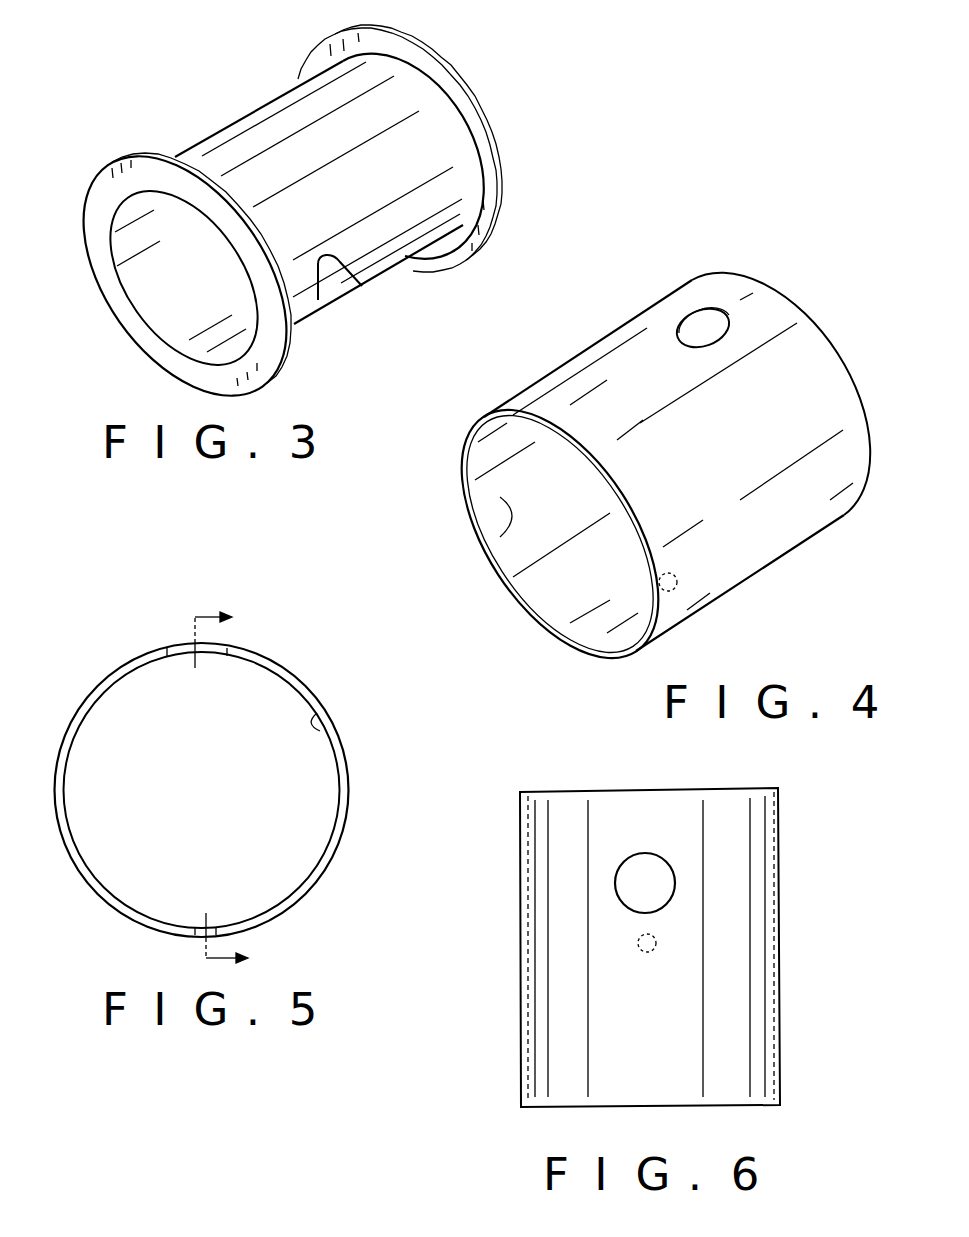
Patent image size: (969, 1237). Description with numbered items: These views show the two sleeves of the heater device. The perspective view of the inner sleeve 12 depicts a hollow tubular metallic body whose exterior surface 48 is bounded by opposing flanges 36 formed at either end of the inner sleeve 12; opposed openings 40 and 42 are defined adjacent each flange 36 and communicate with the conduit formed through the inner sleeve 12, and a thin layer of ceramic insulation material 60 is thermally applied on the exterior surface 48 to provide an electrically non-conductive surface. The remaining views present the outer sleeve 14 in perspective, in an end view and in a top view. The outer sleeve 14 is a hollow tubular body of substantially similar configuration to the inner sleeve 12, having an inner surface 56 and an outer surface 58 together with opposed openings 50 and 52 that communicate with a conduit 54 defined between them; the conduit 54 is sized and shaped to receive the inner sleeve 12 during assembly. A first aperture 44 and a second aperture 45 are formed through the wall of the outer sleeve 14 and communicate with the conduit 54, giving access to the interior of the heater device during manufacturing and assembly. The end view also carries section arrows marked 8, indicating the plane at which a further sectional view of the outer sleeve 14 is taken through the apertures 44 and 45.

In FIG. 3, the inner sleeve 12 is at (407, 300).
In FIG. 3, the ceramic insulation material 60 is at (243, 128).
In FIG. 3, the flange 36 is at (445, 78).
In FIG. 3, the opening 42 is at (497, 150).
In FIG. 3, the opening 40 is at (140, 326).
In FIG. 3, the exterior surface 48 is at (350, 292).
In FIG. 4, the outer sleeve 14 is at (722, 273).
In FIG. 5, the outer sleeve 14 is at (281, 656).
In FIG. 6, the outer sleeve 14 is at (519, 905).
In FIG. 4, the first aperture 44 is at (703, 330).
In FIG. 5, the first aperture 44 is at (184, 642).
In FIG. 6, the first aperture 44 is at (653, 880).
In FIG. 4, the second aperture 45 is at (673, 592).
In FIG. 5, the second aperture 45 is at (200, 940).
In FIG. 6, the second aperture 45 is at (638, 949).
In FIG. 4, the opening 50 is at (830, 337).
In FIG. 4, the opening 52 is at (518, 563).
In FIG. 4, the conduit 54 is at (612, 540).
In FIG. 5, the conduit 54 is at (215, 805).
In FIG. 4, the inner surface 56 is at (497, 535).
In FIG. 5, the inner surface 56 is at (320, 723).
In FIG. 4, the outer surface 58 is at (725, 479).
In FIG. 5, the outer surface 58 is at (338, 847).
In FIG. 6, the outer surface 58 is at (664, 1036).
In FIG. 5, the section line 8 is at (231, 788).